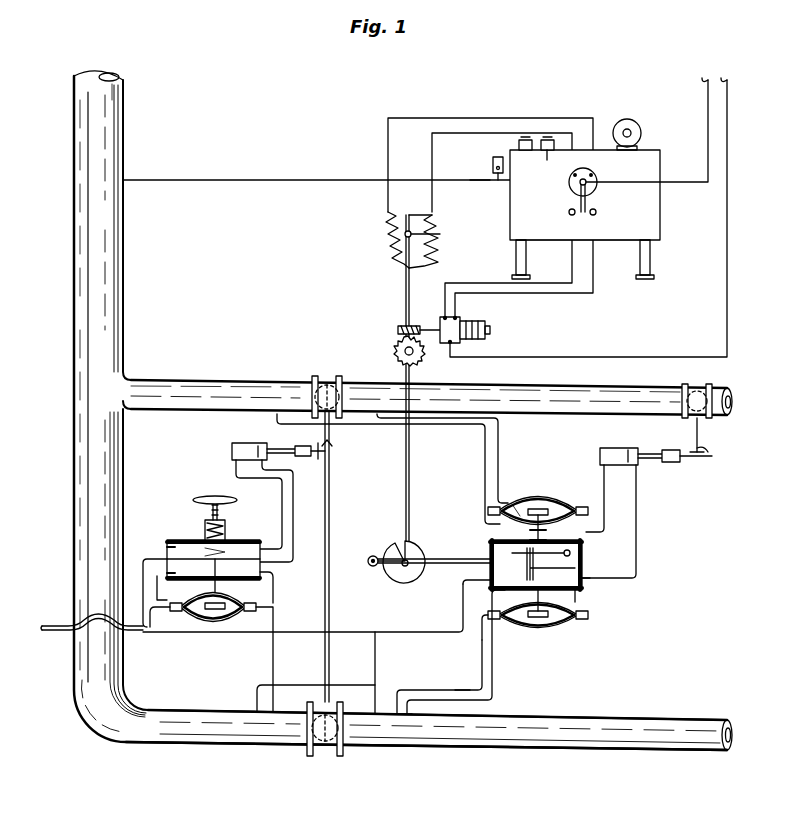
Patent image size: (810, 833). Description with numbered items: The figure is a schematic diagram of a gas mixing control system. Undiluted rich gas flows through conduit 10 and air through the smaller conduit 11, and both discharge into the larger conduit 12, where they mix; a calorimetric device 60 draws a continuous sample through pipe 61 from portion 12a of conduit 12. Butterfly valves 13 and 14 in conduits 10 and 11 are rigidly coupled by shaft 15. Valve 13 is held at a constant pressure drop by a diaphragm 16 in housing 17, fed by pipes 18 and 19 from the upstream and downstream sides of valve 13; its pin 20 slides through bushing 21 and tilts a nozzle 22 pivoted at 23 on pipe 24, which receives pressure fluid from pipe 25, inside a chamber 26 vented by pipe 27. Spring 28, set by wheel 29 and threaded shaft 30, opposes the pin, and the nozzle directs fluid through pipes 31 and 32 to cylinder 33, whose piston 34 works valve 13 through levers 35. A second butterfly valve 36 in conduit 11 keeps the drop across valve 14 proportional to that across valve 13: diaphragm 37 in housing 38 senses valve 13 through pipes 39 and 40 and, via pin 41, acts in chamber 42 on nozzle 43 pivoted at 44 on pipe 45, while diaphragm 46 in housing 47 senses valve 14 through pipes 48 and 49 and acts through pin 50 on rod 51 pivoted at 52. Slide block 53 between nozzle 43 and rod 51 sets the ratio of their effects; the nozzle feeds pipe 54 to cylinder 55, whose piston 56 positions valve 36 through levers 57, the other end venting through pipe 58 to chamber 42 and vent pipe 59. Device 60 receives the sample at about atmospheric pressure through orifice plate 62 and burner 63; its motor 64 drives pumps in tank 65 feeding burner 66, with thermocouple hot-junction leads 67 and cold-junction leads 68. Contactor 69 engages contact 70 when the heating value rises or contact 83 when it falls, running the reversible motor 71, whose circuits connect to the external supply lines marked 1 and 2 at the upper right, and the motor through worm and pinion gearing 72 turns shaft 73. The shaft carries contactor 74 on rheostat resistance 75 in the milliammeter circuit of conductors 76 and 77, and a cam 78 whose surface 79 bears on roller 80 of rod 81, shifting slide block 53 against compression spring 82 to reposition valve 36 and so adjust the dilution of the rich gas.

The supply line L1 1 is at (705, 60).
The supply line L2 2 is at (737, 60).
The conduit 10 is at (652, 750).
The conduit 11 is at (620, 386).
The conduit 12 is at (78, 530).
The portion of conduit 12 12a is at (90, 163).
The butterfly valve 13 is at (332, 757).
The butterfly valve 14 is at (328, 378).
The rod or shaft 15 is at (329, 490).
The flexible diaphragm 16 is at (222, 612).
The housing 17 is at (198, 628).
The pipe 18 is at (377, 658).
The pipe 19 is at (275, 660).
The rod or pin 20 is at (188, 612).
The fluid-tight opening or bushing 21 is at (262, 573).
The nozzle 22 is at (200, 541).
The pivot 23 is at (170, 545).
The pipe 24 is at (142, 566).
The pipe 25 is at (60, 626).
The chamber 26 is at (246, 540).
The vent pipe 27 is at (157, 589).
The spring 28 is at (223, 546).
The knob or wheel 29 is at (214, 497).
The threaded shaft 30 is at (206, 506).
The pipe 31 is at (294, 547).
The pipe 32 is at (283, 512).
The cylinder 33 is at (236, 442).
The piston 34 is at (265, 442).
The set of levers 35 is at (336, 452).
The second butterfly valve 36 is at (712, 386).
The diaphragm 37 is at (564, 628).
The housing 38 is at (540, 636).
The pipe 39 is at (496, 679).
The pipe 40 is at (455, 689).
The pin 41 is at (510, 636).
The chamber 42 is at (568, 545).
The nozzle 43 is at (584, 586).
The pivot 44 is at (468, 584).
The pipe 45 is at (414, 631).
The diaphragm 46 is at (552, 505).
The housing 47 is at (548, 494).
The pipe 48 is at (500, 447).
The pipe 49 is at (484, 459).
The pin 50 is at (520, 498).
The rod or bar 51 is at (500, 546).
The pivot 52 is at (571, 553).
The slide block 53 is at (586, 571).
The pipe 54 is at (602, 480).
The cylinder 55 is at (605, 447).
The piston 56 is at (639, 449).
The system of levers 57 is at (690, 462).
The pipe 58 is at (638, 518).
The vent pipe 59 is at (578, 600).
The calorimetric device 60 is at (662, 214).
The pipe 61 is at (284, 178).
The orifice plate 62 is at (478, 180).
The burner 63 is at (495, 158).
The electric motor 64 is at (641, 125).
The tank 65 is at (585, 225).
The burner 66 is at (548, 160).
The leads 67 is at (547, 138).
The leads 68 is at (525, 138).
The contactor 69 is at (579, 206).
The contact 70 is at (596, 209).
The split-field reversible motor 71 is at (492, 315).
The worm and pinion gearing 72 is at (396, 330).
The shaft 73 is at (411, 486).
The contactor 74 is at (440, 244).
The rheostat resistance 75 is at (385, 246).
The conductor 76 is at (430, 152).
The conductor 77 is at (386, 160).
The cam 78 is at (412, 550).
The cam surface 79 is at (384, 570).
The roller 80 is at (372, 556).
The rod 81 is at (446, 565).
The coiled compression spring 82 is at (494, 557).
The contact 83 is at (569, 213).